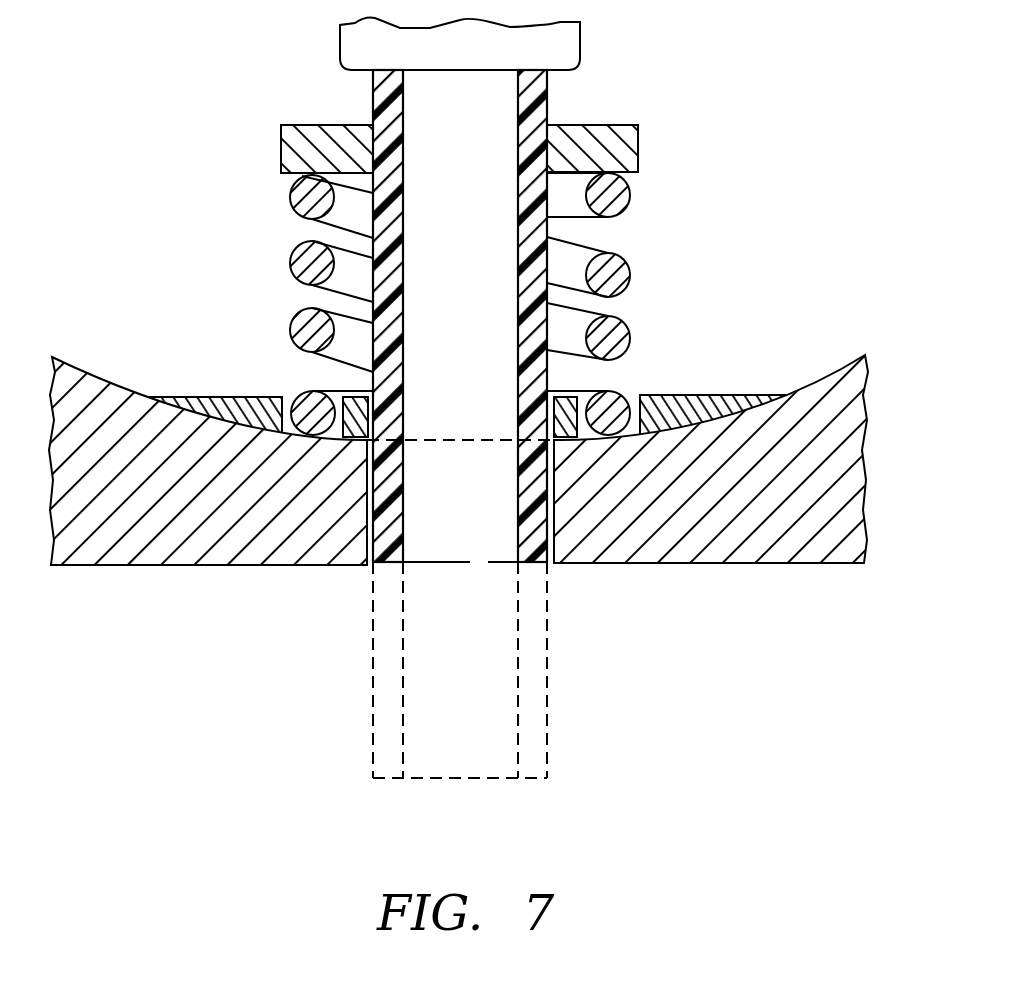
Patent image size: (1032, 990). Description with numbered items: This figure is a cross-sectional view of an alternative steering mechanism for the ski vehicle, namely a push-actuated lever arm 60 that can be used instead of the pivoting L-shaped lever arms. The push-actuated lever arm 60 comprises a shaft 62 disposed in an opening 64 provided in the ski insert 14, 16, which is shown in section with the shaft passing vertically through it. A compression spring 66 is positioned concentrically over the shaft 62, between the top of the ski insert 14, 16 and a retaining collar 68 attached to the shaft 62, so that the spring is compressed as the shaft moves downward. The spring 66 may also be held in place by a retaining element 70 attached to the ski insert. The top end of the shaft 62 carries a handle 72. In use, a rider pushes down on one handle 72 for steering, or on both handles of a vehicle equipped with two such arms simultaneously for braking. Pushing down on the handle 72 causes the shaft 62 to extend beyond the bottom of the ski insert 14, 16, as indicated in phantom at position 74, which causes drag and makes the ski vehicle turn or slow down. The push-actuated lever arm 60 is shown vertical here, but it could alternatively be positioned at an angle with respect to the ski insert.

The push-actuated lever arm 60 is at (833, 128).
The shaft 62 is at (480, 543).
The opening 64 is at (373, 565).
The compression spring 66 is at (622, 267).
The retaining collar 68 is at (628, 137).
The retaining element 70 is at (687, 402).
The handle 72 is at (570, 48).
The position 74 is at (533, 722).
The ski insert 14 is at (458, 460).
The ski insert 16 is at (173, 492).